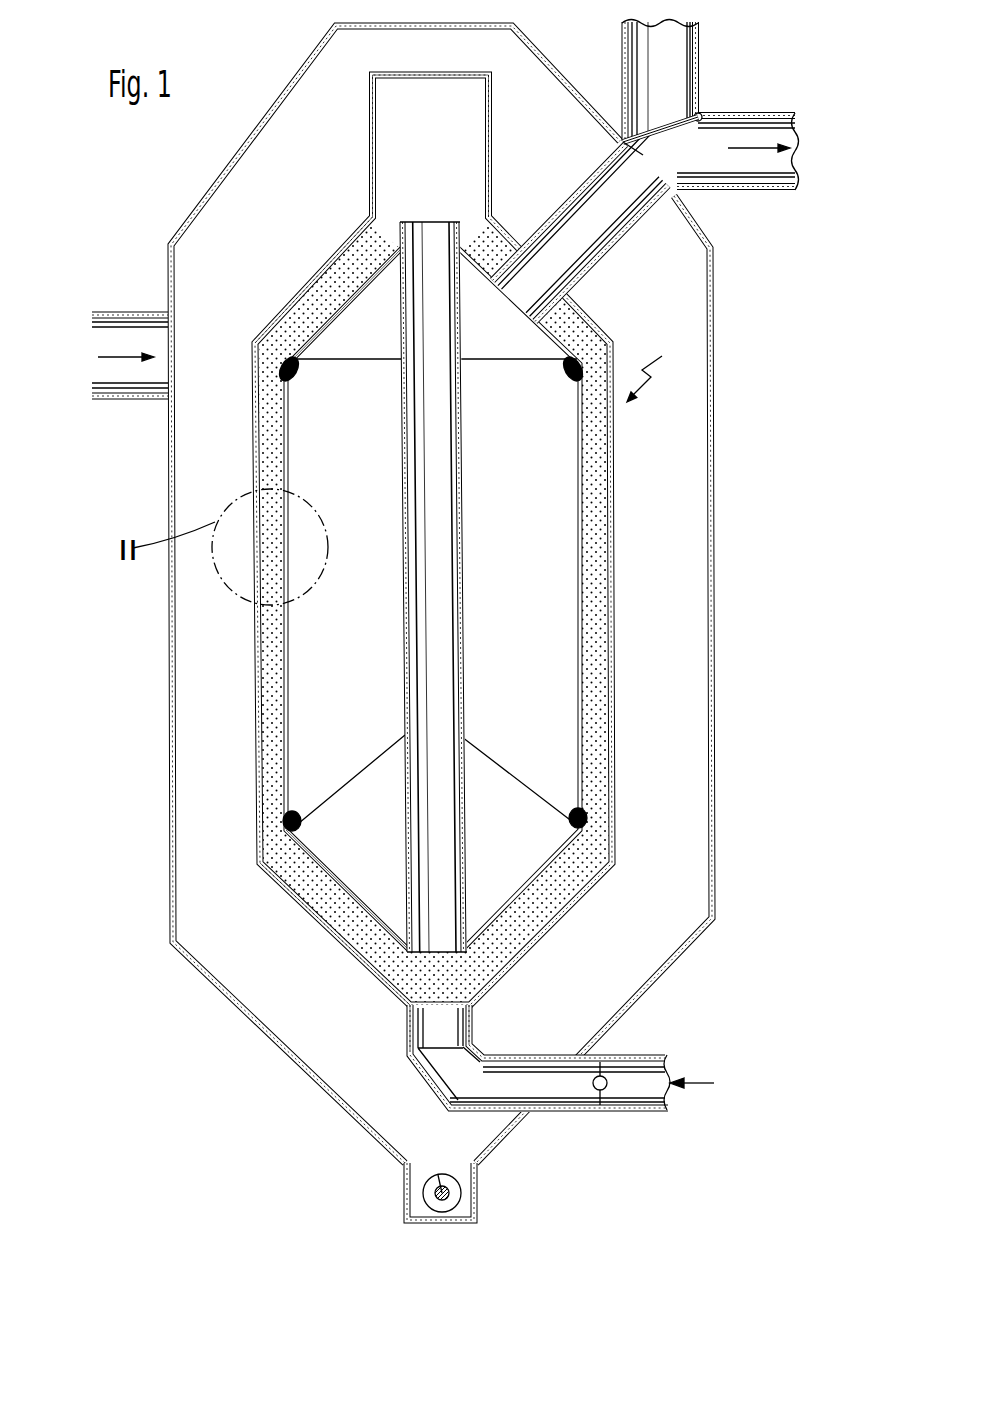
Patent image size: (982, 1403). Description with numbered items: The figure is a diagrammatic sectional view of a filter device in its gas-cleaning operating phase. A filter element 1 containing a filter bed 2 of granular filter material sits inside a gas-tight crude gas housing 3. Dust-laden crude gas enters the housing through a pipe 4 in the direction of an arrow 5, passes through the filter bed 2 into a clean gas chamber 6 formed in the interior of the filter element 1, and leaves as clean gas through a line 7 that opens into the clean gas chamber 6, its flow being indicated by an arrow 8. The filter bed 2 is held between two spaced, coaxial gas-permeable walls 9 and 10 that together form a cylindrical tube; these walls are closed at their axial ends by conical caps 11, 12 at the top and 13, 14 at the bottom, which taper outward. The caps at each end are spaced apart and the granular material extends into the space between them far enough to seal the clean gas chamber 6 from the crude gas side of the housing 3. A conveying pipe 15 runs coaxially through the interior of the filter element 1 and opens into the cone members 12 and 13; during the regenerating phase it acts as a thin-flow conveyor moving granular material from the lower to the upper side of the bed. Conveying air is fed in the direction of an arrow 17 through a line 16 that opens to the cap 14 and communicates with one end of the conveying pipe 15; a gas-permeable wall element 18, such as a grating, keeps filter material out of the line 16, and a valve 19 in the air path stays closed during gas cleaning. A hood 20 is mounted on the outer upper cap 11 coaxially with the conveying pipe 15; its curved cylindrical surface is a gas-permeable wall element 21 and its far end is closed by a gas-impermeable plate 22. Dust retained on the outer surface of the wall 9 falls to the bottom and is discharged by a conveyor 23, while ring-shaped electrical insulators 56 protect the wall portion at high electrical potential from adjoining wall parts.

The filter element 1 is at (653, 371).
The filter bed 2 is at (597, 467).
The crude gas housing 3 is at (170, 712).
The pipe 4 is at (112, 312).
The arrow 5 is at (124, 362).
The clean gas chamber 6 is at (509, 477).
The line 7 is at (614, 246).
The arrow 8 is at (748, 147).
The gas-permeable wall 9 is at (613, 560).
The gas-permeable wall 10 is at (577, 582).
The conical member 11 is at (316, 278).
The conical member 12 is at (370, 282).
The conical member 13 is at (346, 887).
The conical member 14 is at (312, 912).
The conveying pipe 15 is at (459, 418).
The line 16 is at (565, 1112).
The arrow 17 is at (712, 1083).
The gas-permeable wall element 18 is at (470, 1022).
The valve 19 is at (606, 1078).
The hood 20 is at (423, 64).
The gas-permeable wall element 21 is at (368, 98).
The plate 22 is at (489, 85).
The conveyor 23 is at (462, 1197).
The ring-shaped electrical insulator 56 is at (295, 369).